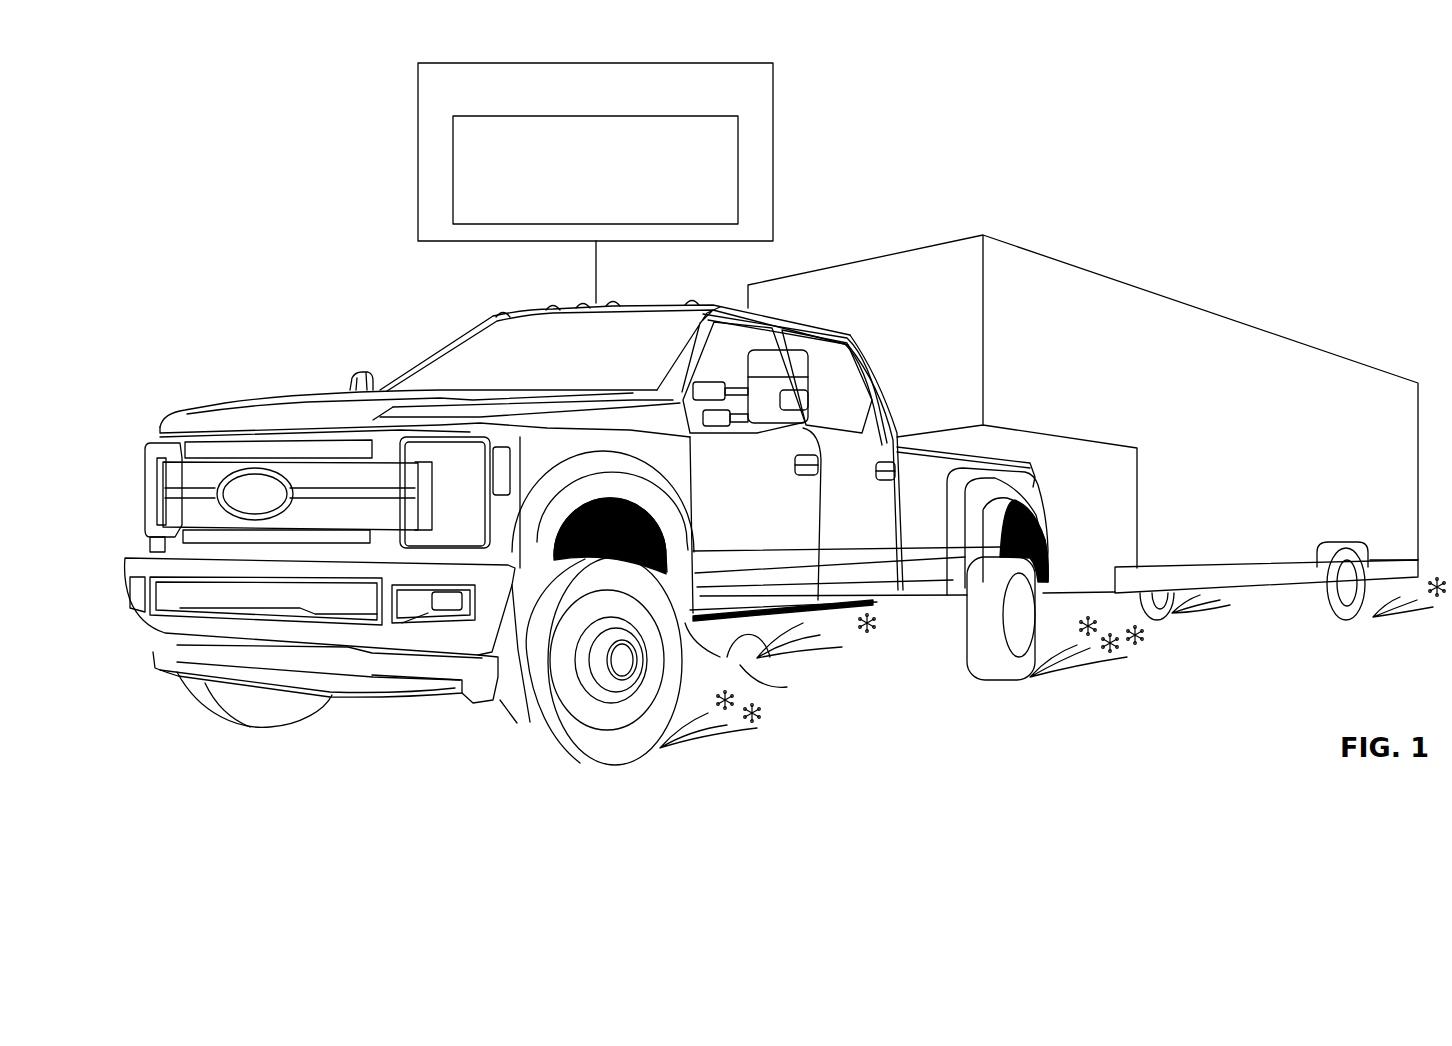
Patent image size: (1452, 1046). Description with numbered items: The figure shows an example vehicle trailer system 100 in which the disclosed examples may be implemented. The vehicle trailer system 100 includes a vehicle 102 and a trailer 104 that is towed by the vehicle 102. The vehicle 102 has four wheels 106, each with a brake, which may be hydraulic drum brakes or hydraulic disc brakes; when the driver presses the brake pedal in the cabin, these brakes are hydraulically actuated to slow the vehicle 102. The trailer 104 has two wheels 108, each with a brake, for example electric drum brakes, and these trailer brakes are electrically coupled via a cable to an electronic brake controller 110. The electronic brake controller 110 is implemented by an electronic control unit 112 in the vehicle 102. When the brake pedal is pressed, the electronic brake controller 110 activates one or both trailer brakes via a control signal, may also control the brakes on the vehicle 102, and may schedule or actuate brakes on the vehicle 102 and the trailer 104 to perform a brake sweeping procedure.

The vehicle trailer system 100 is at (228, 100).
The vehicle 102 is at (626, 521).
The trailer 104 is at (1090, 438).
The wheels 106 is at (280, 727).
The wheels 108 is at (1163, 618).
The electronic brake controller 110 is at (738, 165).
The electronic control unit 112 is at (775, 107).